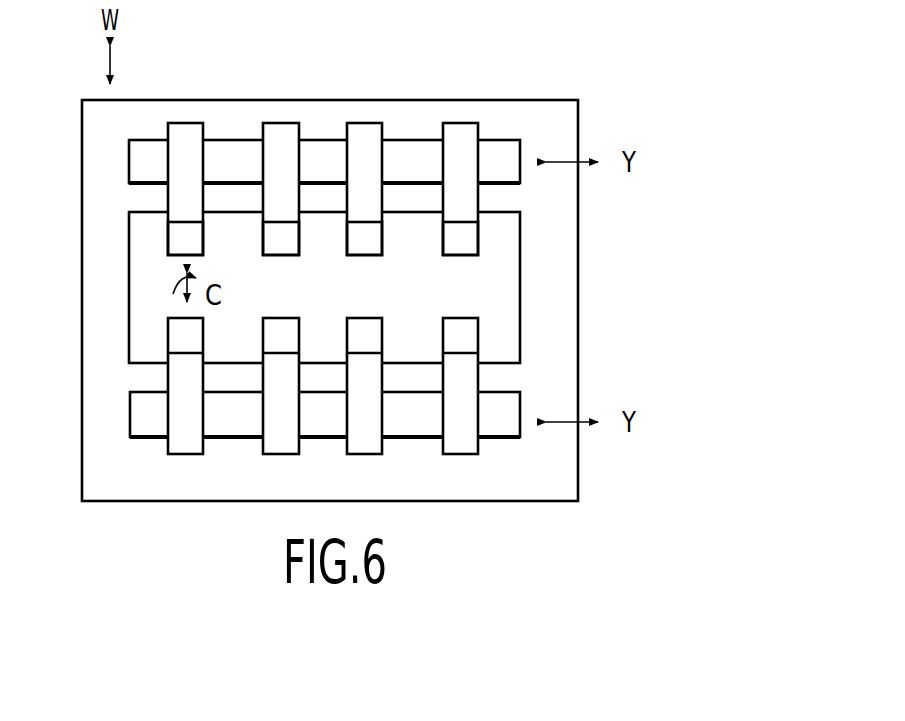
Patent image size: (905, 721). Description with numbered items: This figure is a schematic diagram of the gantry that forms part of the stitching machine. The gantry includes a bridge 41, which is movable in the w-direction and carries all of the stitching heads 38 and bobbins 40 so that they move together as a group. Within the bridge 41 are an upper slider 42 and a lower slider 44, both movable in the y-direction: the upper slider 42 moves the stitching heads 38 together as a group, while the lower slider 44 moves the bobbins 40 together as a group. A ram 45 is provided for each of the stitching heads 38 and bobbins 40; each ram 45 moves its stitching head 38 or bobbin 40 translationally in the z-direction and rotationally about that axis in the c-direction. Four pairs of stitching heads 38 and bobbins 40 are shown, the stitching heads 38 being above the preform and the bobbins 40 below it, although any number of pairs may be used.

The stitching heads 38 is at (203, 242).
The bobbins 40 is at (203, 337).
The bridge 41 is at (528, 100).
The upper slider 42 is at (130, 167).
The lower slider 44 is at (130, 426).
The ram 45 is at (191, 123).